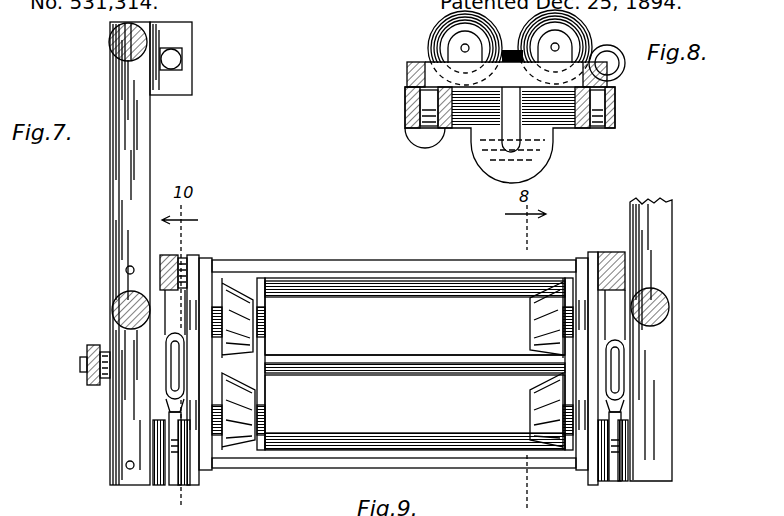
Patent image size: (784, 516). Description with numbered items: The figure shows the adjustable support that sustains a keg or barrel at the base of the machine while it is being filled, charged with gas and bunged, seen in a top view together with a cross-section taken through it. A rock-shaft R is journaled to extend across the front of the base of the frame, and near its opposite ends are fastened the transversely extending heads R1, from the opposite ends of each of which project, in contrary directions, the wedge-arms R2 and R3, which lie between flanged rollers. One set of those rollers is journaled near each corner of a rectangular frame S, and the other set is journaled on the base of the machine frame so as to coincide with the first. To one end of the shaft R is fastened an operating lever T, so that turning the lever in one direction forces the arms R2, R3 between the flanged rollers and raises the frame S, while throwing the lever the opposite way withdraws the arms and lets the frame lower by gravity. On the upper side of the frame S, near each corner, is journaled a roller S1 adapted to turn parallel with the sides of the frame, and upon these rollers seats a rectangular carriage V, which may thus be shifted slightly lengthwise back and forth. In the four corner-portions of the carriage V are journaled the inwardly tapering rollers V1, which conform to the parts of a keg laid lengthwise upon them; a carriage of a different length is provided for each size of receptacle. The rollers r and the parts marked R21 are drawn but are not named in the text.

In FIG. 7, the roller r is at (110, 44).
In FIG. 7, the operating lever T is at (85, 350).
In FIG. 7, the rectangular carriage V is at (415, 364).
In FIG. 8, the rectangular carriage V is at (418, 66).
In FIG. 7, the inwardly tapering rollers V1 is at (240, 300).
In FIG. 7, the rock-shaft R is at (413, 365).
In FIG. 7, the transversely extending heads R1 is at (172, 378).
In FIG. 7, the wedge-arm R2 is at (174, 312).
In FIG. 7, the wedge-arm R3 is at (166, 417).
In FIG. 7, the hub / journal R21 is at (176, 262).
In FIG. 8, the hub / journal R21 is at (425, 130).
In FIG. 8, the rectangular frame S is at (407, 97).
In FIG. 8, the roller S1 is at (514, 119).